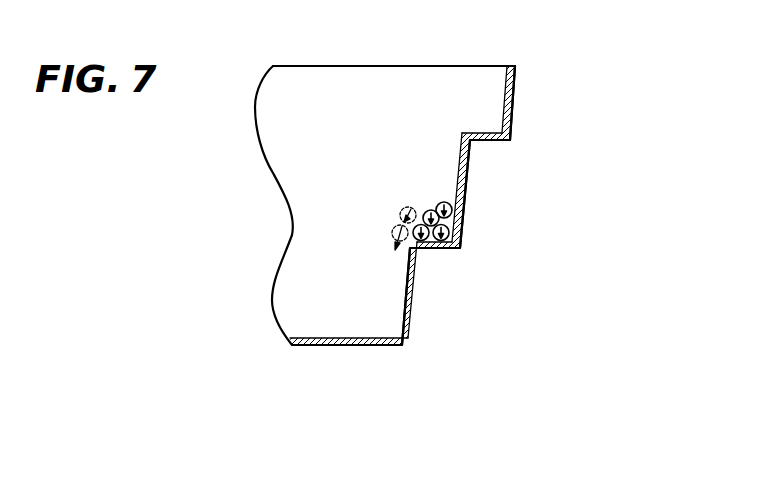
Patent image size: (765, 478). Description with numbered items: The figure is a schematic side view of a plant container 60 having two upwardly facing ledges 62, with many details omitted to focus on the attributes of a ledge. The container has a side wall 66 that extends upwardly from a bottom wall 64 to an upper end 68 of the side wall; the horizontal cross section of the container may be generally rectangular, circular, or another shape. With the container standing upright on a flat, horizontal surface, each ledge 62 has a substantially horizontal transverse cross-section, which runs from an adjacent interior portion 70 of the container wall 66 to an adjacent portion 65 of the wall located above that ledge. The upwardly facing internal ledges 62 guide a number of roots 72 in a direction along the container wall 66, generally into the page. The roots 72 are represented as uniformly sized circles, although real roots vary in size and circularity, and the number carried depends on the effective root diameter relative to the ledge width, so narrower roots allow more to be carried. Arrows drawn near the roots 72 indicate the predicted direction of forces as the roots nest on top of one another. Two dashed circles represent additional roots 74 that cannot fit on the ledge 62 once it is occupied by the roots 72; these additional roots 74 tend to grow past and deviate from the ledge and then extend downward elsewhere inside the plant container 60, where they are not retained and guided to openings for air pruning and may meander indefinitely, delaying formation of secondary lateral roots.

The plant container 60 is at (533, 50).
The upwardly facing ledge 62 is at (487, 130).
The bottom wall 64 is at (342, 345).
The adjacent portion of the container wall above the ledge 65 is at (512, 122).
The side wall 66 is at (505, 175).
The upper end of the side wall 68 is at (477, 65).
The adjacent interior portion of the container wall 70 is at (462, 138).
The roots 72 is at (430, 202).
The additional roots 74 is at (393, 217).